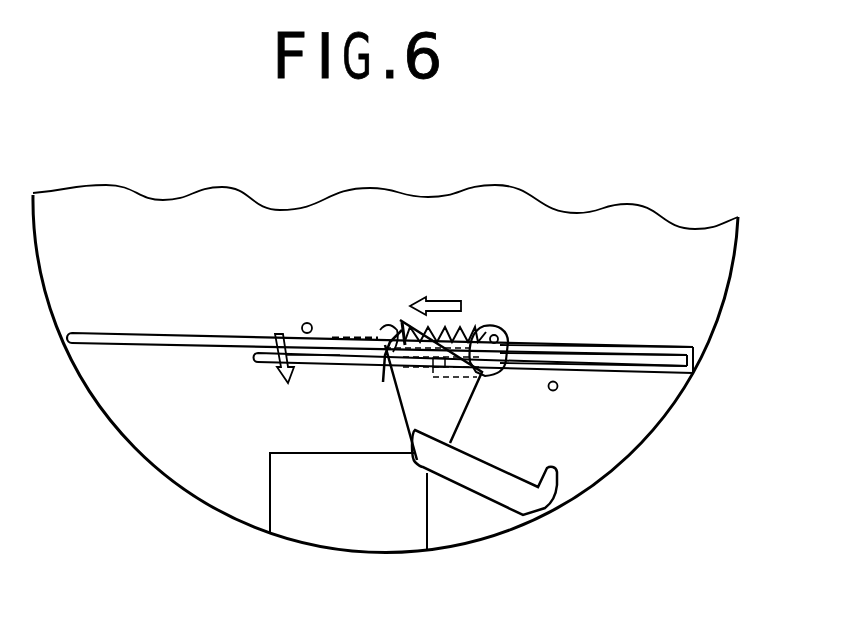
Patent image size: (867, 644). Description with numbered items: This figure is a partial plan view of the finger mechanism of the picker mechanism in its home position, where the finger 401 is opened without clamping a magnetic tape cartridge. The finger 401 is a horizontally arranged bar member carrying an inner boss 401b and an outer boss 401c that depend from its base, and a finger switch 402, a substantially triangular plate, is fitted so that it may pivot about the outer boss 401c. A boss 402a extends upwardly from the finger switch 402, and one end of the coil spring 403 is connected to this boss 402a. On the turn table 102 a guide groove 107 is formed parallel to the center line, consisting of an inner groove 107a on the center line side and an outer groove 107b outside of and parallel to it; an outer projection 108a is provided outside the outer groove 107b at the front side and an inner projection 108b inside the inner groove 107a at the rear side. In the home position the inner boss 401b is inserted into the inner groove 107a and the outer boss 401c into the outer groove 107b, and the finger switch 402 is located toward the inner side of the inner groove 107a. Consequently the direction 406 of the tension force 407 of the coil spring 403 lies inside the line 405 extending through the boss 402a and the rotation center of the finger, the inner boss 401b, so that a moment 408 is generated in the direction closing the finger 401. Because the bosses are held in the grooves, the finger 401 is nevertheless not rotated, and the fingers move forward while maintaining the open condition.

The turn table 102 is at (157, 470).
The guide groove 107 is at (175, 334).
The inner groove 107a is at (625, 345).
The outer groove 107b is at (630, 375).
The outer projection 108a is at (557, 390).
The inner projection 108b is at (305, 323).
The finger 401 is at (537, 510).
The inner boss 401b is at (386, 352).
The outer boss 401c is at (440, 367).
The finger switch 402 is at (499, 333).
The boss 402a is at (500, 335).
The coil spring 403 is at (383, 330).
The line 405 is at (300, 358).
The direction of the tension force 406 is at (345, 332).
The tension force 407 is at (443, 299).
The moment 408 is at (273, 365).